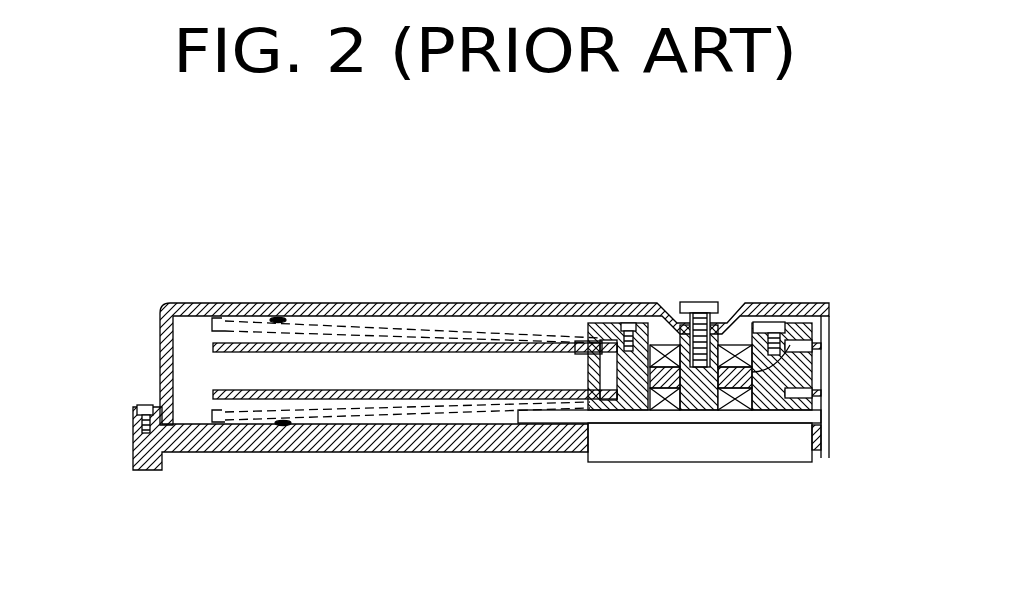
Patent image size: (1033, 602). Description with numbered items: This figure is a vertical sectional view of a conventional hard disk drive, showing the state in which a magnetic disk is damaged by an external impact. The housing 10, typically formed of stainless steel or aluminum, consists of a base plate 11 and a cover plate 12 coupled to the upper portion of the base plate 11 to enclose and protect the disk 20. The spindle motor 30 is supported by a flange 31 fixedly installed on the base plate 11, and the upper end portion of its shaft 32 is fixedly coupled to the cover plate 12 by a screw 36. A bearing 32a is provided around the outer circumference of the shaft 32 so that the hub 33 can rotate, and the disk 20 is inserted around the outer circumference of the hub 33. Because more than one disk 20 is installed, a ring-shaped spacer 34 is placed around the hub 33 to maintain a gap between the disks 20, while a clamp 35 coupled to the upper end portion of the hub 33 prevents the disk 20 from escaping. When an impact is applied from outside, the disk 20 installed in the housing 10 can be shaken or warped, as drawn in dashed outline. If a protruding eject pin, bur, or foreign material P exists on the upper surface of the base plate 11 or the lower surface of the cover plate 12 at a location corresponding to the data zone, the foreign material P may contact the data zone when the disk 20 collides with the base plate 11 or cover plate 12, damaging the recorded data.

The housing 10 is at (52, 374).
The base plate 11 is at (175, 436).
The cover plate 12 is at (160, 323).
The disk 20 is at (232, 343).
The foreign material P is at (287, 320).
The spindle motor 30 is at (726, 463).
The flange 31 is at (560, 419).
The shaft 32 is at (735, 318).
The bearing 32a is at (779, 338).
The hub 33 is at (628, 411).
The spacer 34 is at (582, 356).
The clamp 35 is at (620, 325).
The screw 36 is at (700, 302).